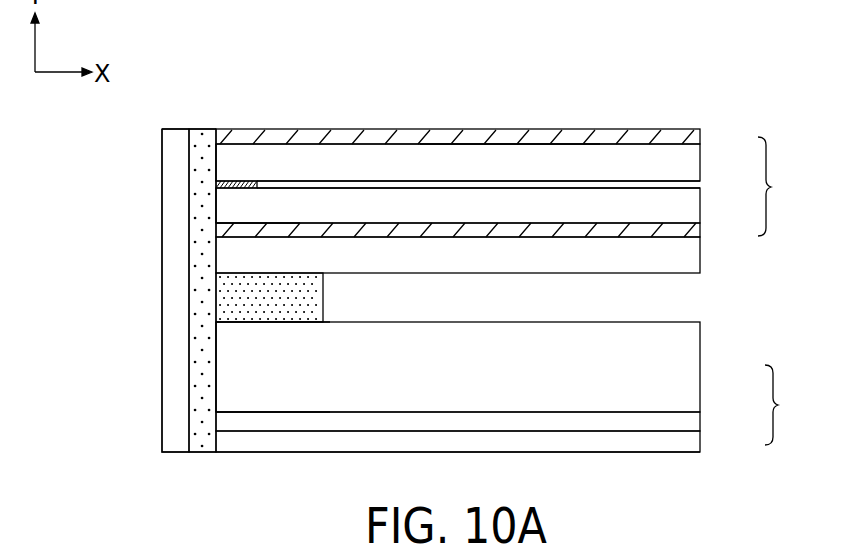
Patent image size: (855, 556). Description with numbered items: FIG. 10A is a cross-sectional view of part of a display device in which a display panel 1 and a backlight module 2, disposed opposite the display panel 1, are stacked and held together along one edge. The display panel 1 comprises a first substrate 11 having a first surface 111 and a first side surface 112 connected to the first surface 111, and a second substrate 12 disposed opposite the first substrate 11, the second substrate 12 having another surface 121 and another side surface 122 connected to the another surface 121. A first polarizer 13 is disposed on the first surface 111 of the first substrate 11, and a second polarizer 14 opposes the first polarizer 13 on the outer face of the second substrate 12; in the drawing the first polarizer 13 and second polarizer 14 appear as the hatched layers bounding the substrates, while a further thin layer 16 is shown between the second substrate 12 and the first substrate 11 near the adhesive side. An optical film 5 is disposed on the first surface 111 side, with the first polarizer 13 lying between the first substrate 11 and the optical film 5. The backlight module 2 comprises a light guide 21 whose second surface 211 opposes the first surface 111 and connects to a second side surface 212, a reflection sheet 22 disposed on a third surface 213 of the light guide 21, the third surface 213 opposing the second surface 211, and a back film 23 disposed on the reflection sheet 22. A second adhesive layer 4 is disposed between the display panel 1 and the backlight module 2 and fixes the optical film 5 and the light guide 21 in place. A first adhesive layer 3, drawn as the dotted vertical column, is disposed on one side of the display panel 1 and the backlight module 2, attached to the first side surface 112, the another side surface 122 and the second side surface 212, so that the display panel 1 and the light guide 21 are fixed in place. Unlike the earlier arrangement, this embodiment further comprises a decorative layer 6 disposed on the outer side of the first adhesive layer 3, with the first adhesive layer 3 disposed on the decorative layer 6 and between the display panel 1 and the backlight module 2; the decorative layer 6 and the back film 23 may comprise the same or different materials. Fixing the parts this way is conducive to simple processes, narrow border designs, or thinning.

The display panel 1 is at (773, 186).
The backlight module 2 is at (780, 405).
The first adhesive layer 3 is at (196, 143).
The second adhesive layer 4 is at (318, 293).
The optical film 5 is at (700, 261).
The decorative layer 6 is at (172, 270).
The first substrate 11 is at (700, 204).
The second substrate 12 is at (700, 168).
The first polarizer 13 is at (700, 231).
The second polarizer 14 is at (700, 142).
The adhesive layer 16 is at (216, 188).
The light guide 21 is at (700, 371).
The reflection sheet 22 is at (700, 421).
The back film 23 is at (700, 446).
The first surface 111 is at (216, 232).
The first side surface 112 is at (216, 210).
The another surface 121 is at (493, 144).
The another side surface 122 is at (216, 160).
The second surface 211 is at (238, 322).
The second side surface 212 is at (216, 367).
The third surface 213 is at (230, 412).